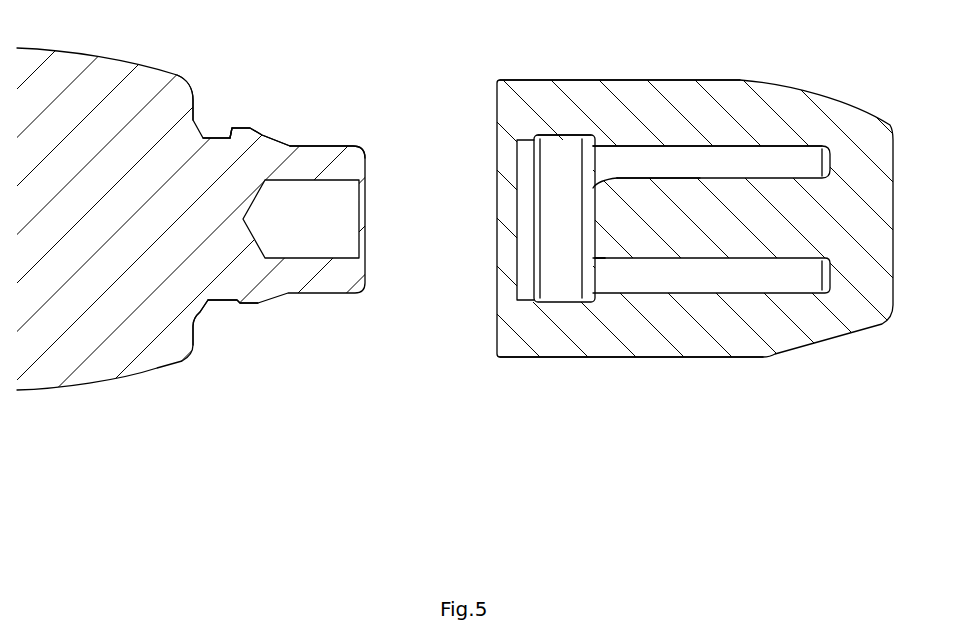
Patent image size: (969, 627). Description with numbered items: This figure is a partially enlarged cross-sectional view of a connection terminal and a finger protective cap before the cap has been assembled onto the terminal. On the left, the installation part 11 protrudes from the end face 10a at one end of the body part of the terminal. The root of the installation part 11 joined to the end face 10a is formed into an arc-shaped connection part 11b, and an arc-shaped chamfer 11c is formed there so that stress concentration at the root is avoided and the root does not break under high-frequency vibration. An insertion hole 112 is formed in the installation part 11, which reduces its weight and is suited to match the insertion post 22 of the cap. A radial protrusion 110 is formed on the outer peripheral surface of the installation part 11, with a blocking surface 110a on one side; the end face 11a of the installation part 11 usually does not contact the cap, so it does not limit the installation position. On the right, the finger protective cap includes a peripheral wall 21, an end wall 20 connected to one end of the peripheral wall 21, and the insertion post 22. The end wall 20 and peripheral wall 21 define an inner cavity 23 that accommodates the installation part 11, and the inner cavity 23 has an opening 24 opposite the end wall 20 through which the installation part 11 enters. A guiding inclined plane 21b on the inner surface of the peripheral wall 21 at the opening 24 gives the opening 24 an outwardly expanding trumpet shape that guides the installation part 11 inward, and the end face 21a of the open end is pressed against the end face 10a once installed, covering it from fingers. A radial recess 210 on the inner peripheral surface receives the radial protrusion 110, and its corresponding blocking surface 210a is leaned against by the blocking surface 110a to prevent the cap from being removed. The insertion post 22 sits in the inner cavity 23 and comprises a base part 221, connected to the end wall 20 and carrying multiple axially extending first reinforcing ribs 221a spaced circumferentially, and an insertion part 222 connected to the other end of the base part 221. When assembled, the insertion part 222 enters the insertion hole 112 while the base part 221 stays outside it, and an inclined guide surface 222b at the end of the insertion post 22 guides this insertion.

The end face of body part 10a is at (193, 100).
The blocking surface 110a is at (233, 124).
The radial protrusion 110 is at (252, 128).
The end face of installation part 11a is at (365, 163).
The installation part 11 is at (308, 297).
The arc-shaped connection part 11b is at (209, 308).
The arc-shaped chamfer 11c is at (207, 310).
The insertion hole 112 is at (343, 220).
The end wall 20 is at (858, 223).
The peripheral wall 21 is at (712, 117).
The end face of open end 21a is at (496, 102).
The guiding inclined plane 21b is at (517, 300).
The inner cavity 23 is at (750, 160).
The opening 24 is at (507, 214).
The radial recess 210 is at (558, 285).
The corresponding blocking surface 210a is at (540, 160).
The insertion post 22 is at (653, 430).
The base part 221 is at (737, 245).
The first reinforcing ribs 221a is at (677, 177).
The insertion part 222 is at (638, 245).
The inclined guide surface 222b is at (603, 252).